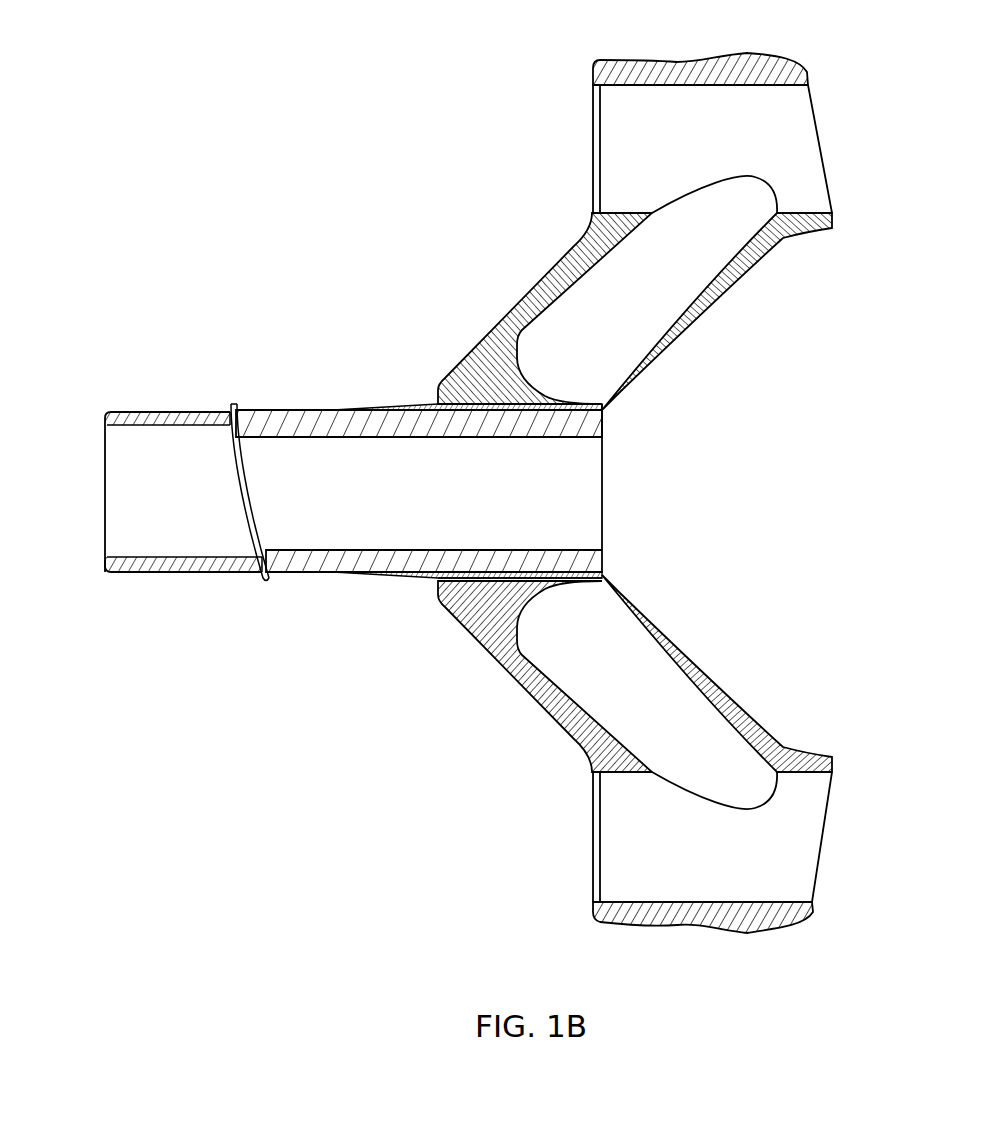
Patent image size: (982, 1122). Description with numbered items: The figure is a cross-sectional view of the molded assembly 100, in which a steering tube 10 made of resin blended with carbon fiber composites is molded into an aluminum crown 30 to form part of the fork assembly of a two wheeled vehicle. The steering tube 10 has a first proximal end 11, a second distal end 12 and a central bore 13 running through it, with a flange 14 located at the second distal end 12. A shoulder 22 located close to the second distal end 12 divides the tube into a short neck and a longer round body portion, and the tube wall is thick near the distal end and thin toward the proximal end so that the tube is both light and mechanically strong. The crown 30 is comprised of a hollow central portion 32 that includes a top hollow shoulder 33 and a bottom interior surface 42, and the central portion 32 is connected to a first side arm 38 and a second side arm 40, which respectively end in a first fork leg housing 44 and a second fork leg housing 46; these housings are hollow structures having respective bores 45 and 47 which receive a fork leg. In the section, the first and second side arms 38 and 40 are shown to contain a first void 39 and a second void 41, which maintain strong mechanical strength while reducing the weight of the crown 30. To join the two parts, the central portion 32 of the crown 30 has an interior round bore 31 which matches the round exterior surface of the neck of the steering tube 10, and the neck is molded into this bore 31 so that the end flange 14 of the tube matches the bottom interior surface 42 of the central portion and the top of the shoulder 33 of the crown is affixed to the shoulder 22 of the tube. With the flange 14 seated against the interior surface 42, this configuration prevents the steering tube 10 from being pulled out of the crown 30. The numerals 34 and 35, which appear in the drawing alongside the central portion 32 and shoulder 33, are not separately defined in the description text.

The molded assembly 100 is at (201, 259).
The steering tube 10 is at (172, 396).
The first proximal end 11 is at (106, 573).
The second distal end 12 is at (604, 553).
The central bore 13 is at (133, 495).
The flange 14 is at (603, 413).
The shoulder 22 is at (337, 578).
The crown 30 is at (606, 482).
The interior round bore 31 is at (611, 491).
The central portion 32 is at (516, 308).
The top hollow shoulder 33 is at (358, 408).
The overmolded shoulder 34 is at (516, 308).
The thin overmold skirt 35 is at (446, 381).
The first side arm 38 is at (538, 296).
The first void 39 is at (634, 333).
The second side arm 40 is at (513, 672).
The second void 41 is at (656, 693).
The bottom interior surface 42 is at (604, 578).
The first fork leg housing 44 is at (628, 62).
The bore 45 is at (603, 130).
The second fork leg housing 46 is at (627, 922).
The bore 47 is at (603, 840).